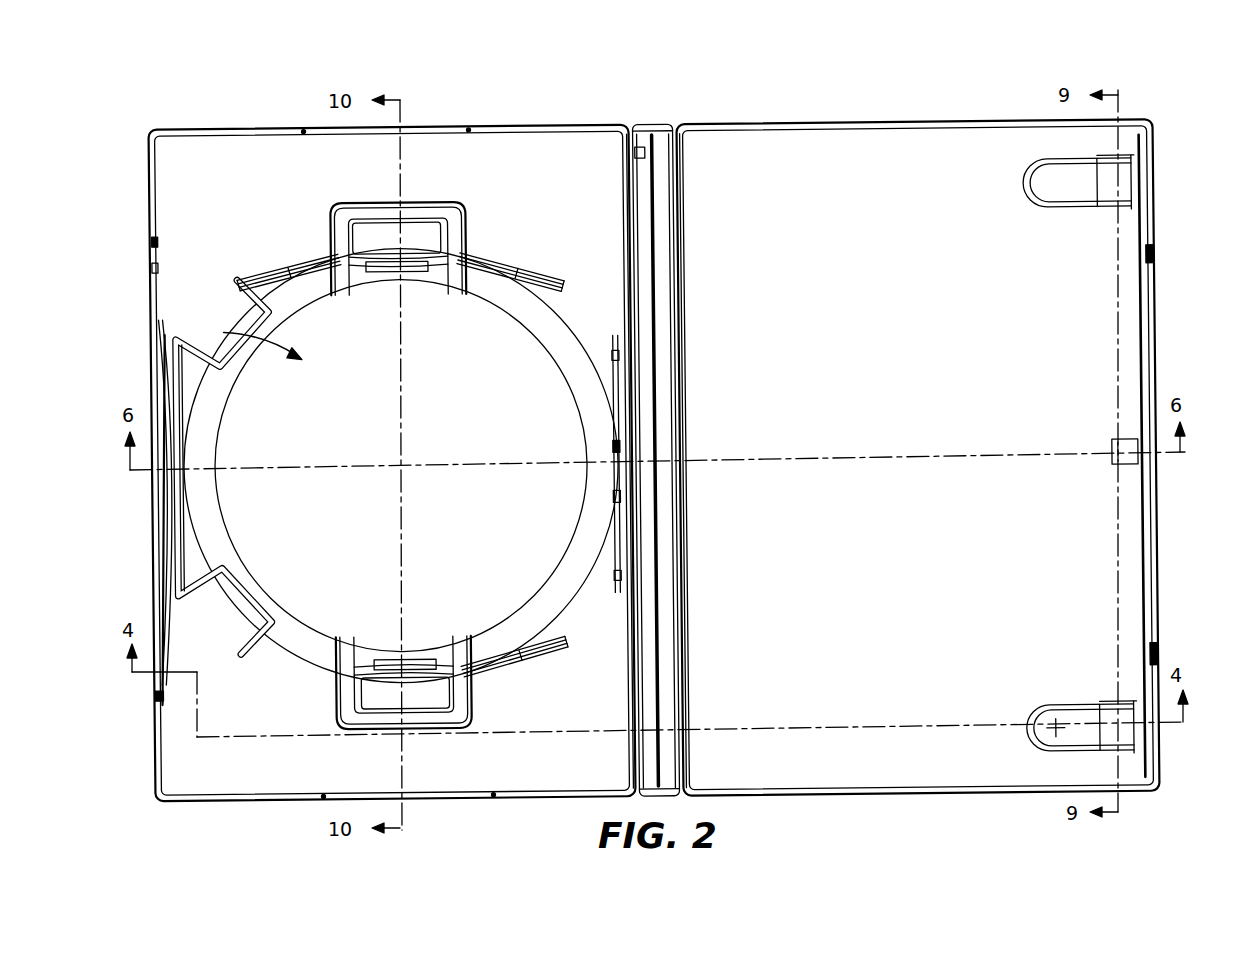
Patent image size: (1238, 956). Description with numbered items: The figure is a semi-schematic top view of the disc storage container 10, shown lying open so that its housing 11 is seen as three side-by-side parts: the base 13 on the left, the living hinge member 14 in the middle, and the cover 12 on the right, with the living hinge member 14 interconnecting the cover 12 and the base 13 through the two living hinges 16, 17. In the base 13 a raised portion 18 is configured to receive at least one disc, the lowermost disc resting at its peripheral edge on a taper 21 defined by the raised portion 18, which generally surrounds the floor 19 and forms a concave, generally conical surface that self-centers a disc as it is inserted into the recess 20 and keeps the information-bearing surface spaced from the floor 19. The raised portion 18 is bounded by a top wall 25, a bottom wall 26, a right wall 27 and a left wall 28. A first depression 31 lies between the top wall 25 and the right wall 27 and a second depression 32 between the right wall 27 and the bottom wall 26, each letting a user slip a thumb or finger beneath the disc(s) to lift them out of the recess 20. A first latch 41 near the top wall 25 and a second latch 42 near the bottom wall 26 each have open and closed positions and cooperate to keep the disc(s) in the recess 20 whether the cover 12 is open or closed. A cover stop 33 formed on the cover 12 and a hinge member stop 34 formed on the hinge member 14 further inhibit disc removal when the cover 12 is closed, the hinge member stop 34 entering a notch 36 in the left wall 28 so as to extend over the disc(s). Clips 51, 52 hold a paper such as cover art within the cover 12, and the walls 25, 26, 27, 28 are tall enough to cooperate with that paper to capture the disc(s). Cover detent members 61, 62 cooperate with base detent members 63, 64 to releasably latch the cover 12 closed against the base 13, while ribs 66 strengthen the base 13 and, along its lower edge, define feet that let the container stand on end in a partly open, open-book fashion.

The disc storage container 10 is at (648, 68).
The housing 11 is at (262, 806).
The cover 12 is at (897, 796).
The base 13 is at (405, 453).
The living hinge member 14 is at (655, 120).
The living hinge 16 is at (684, 302).
The living hinge 17 is at (632, 670).
The raised portion 18 is at (578, 352).
The floor 19 is at (467, 517).
The recess 20 is at (239, 339).
The taper 21 is at (522, 316).
The top wall 25 is at (290, 272).
The bottom wall 26 is at (513, 267).
The right wall 27 is at (195, 527).
The left wall 28 is at (618, 497).
The first depression 31 is at (230, 605).
The second depression 32 is at (252, 350).
The cover stop 33 is at (1127, 468).
The hinge member stop 34 is at (675, 468).
The notch 36 is at (614, 455).
The first latch 41 is at (416, 667).
The second latch 42 is at (388, 270).
The clip 51 is at (1050, 738).
The clip 52 is at (1060, 198).
The cover detent member 61 is at (1160, 666).
The cover detent member 62 is at (1160, 252).
The base detent member 63 is at (150, 696).
The base detent member 64 is at (148, 290).
The ribs 66 is at (309, 132).